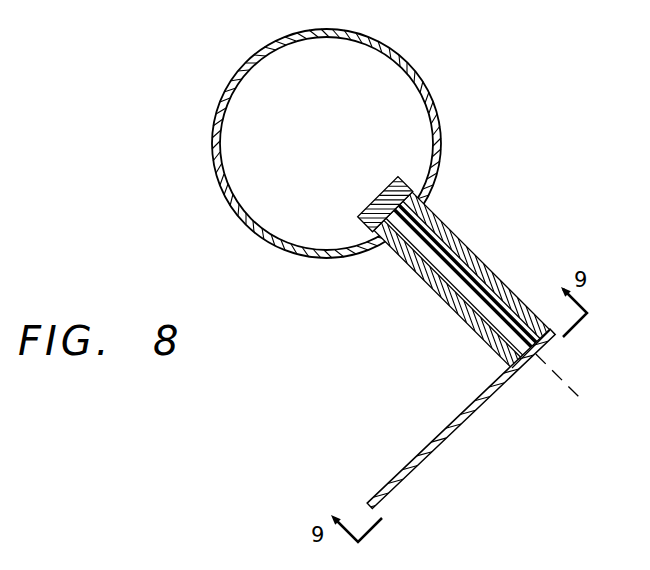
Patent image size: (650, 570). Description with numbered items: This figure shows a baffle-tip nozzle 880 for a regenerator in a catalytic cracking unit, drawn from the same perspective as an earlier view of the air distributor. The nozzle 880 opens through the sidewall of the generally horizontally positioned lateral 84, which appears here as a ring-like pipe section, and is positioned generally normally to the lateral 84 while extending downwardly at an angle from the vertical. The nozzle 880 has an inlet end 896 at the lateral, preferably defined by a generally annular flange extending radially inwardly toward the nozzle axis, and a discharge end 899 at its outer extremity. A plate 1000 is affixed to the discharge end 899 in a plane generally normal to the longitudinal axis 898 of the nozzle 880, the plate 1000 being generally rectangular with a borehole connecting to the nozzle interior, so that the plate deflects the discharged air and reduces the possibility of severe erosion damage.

The lateral 84 is at (423, 82).
The baffle-tip nozzle 880 is at (467, 248).
The inlet end 896 is at (392, 176).
The longitudinal axis 898 is at (561, 379).
The discharge end 899 is at (527, 358).
The plate 1000 is at (424, 460).